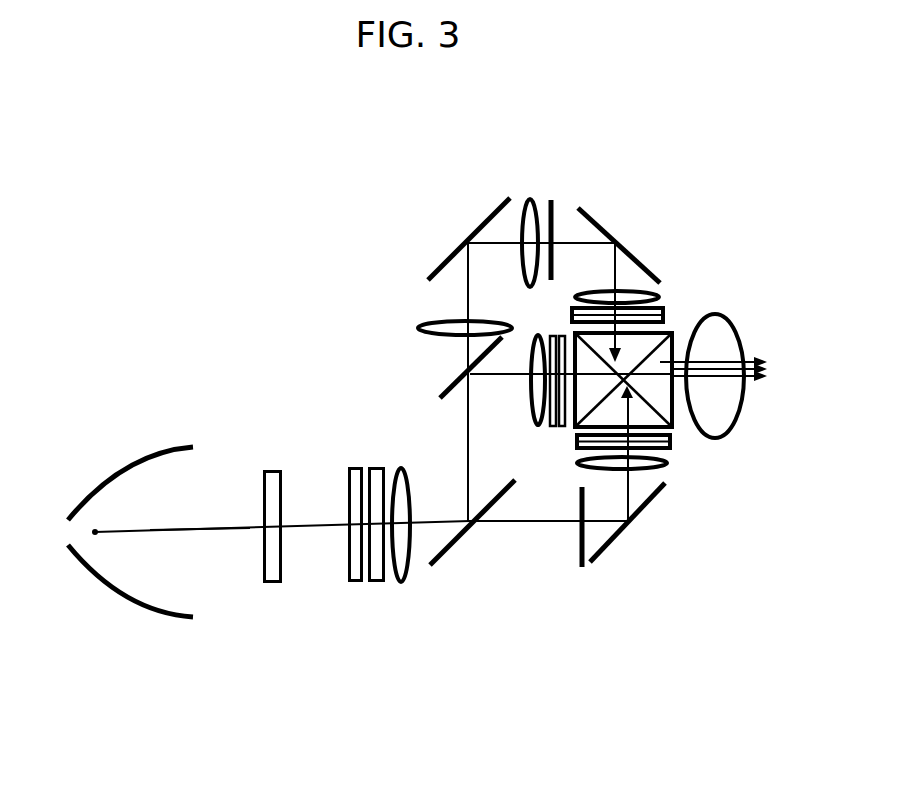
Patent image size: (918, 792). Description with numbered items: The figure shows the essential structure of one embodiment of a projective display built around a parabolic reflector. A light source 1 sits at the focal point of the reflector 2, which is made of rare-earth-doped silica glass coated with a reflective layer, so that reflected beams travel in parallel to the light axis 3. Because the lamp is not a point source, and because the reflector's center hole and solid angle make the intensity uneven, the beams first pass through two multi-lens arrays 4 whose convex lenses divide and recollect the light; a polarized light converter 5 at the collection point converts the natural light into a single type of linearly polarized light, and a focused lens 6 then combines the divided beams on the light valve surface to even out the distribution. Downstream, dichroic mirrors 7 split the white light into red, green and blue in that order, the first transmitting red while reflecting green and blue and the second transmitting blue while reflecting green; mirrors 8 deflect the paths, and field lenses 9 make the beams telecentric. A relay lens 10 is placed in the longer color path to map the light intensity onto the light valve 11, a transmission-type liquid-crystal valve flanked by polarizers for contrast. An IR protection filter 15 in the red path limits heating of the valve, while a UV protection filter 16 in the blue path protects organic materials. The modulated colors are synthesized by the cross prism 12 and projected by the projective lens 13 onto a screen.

The light source 1 is at (99, 530).
The reflector 2 is at (118, 480).
The light axis 3 is at (189, 527).
The multi-lens array 4 is at (347, 575).
The polarized light converter 5 is at (377, 585).
The focused lens 6 is at (409, 557).
The dichroic mirror 7 is at (470, 480).
The mirror 8 is at (504, 207).
The field lens 9 is at (537, 424).
The relay lens 10 is at (578, 297).
The light valve 11 is at (668, 435).
The cross prism 12 is at (661, 393).
The projective lens 13 is at (742, 330).
The IR protection filter 15 is at (584, 567).
The UV protection filter 16 is at (552, 200).